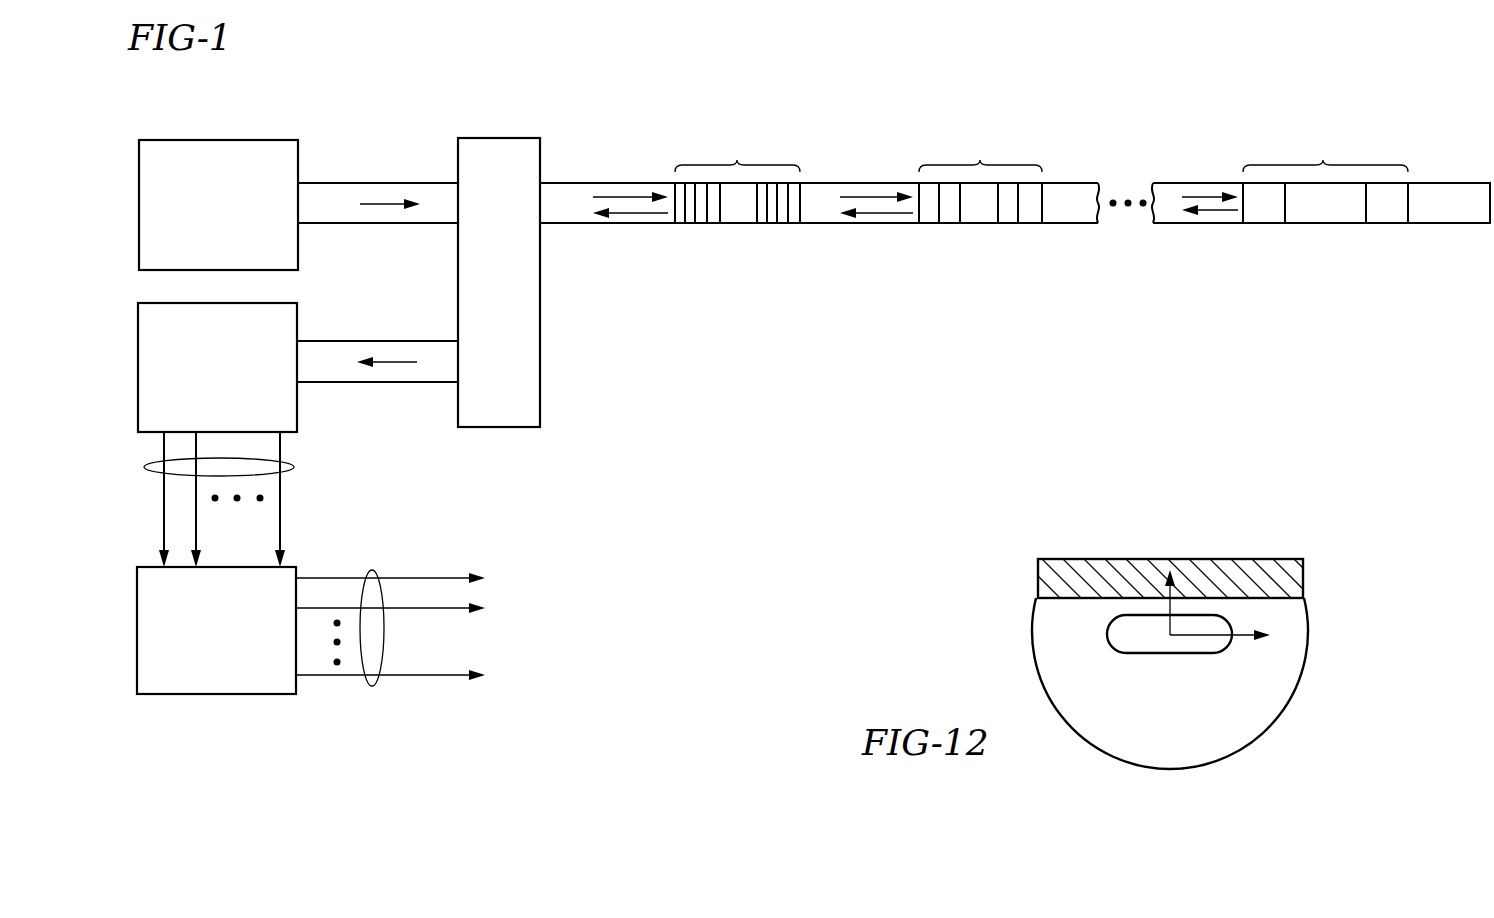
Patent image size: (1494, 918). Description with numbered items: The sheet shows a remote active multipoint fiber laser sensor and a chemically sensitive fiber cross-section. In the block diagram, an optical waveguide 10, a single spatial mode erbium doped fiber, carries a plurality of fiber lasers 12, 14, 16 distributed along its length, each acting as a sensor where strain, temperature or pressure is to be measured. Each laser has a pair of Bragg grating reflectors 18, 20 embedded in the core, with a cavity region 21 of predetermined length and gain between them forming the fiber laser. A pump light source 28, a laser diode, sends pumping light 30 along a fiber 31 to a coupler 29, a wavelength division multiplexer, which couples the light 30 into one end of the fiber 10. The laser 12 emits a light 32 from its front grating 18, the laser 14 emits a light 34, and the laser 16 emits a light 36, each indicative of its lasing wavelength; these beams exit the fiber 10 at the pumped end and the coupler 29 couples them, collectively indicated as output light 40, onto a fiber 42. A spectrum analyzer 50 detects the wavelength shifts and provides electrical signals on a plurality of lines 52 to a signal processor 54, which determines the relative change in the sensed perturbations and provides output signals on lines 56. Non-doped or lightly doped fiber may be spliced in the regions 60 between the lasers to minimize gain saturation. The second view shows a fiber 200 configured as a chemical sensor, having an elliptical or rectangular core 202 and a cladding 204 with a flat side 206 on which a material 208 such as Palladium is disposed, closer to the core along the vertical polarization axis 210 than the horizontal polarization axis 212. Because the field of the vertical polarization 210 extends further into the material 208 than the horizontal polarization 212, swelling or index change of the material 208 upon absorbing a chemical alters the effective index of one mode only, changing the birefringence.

In FIG. 1, the optical waveguide 10 is at (598, 170).
In FIG. 1, the fiber laser 12 is at (737, 127).
In FIG. 1, the fiber laser 14 is at (980, 127).
In FIG. 1, the fiber laser 16 is at (1325, 127).
In FIG. 1, the front Bragg grating reflector 18 is at (720, 229).
In FIG. 1, the rear Bragg grating reflector 20 is at (757, 229).
In FIG. 1, the cavity region 21 is at (738, 215).
In FIG. 1, the pump light source 28 is at (262, 150).
In FIG. 1, the coupler 29 is at (542, 400).
In FIG. 1, the pumping light 30 is at (393, 203).
In FIG. 1, the fiber 31 is at (336, 192).
In FIG. 1, the light 32 is at (632, 215).
In FIG. 1, the light 34 is at (858, 215).
In FIG. 1, the light 36 is at (1225, 215).
In FIG. 1, the output light 40 is at (396, 360).
In FIG. 1, the fiber 42 is at (345, 340).
In FIG. 1, the spectrum analyzer 50 is at (290, 417).
In FIG. 1, the lines 52 is at (294, 467).
In FIG. 1, the signal processor 54 is at (167, 694).
In FIG. 1, the lines 56 is at (373, 687).
In FIG. 1, the regions 60 is at (566, 215).
In FIG. 12, the fiber 200 is at (1283, 741).
In FIG. 12, the core 202 is at (1137, 653).
In FIG. 12, the cladding 204 is at (1055, 658).
In FIG. 12, the flat side 206 is at (1290, 607).
In FIG. 12, the material 208 is at (1043, 577).
In FIG. 12, the vertical polarization axis 210 is at (1172, 607).
In FIG. 12, the horizontal polarization axis 212 is at (1247, 642).